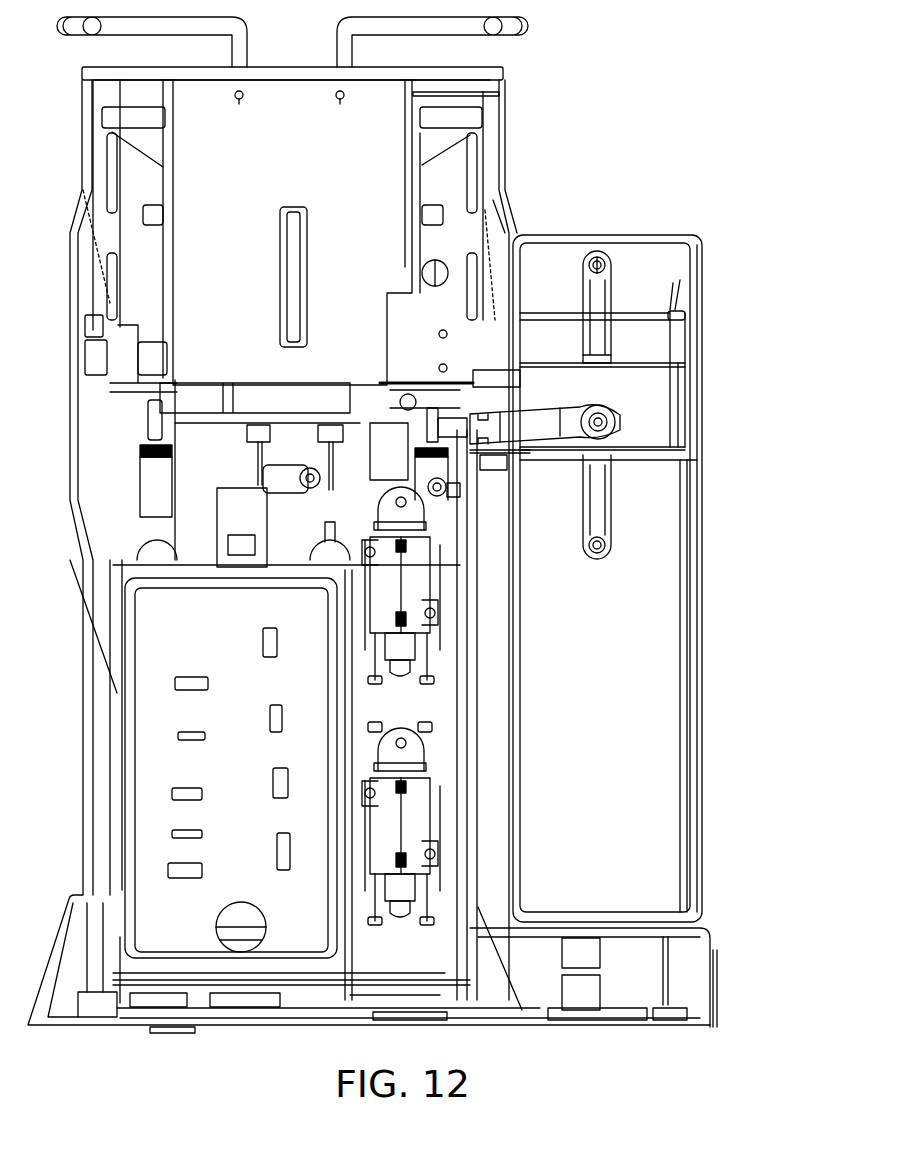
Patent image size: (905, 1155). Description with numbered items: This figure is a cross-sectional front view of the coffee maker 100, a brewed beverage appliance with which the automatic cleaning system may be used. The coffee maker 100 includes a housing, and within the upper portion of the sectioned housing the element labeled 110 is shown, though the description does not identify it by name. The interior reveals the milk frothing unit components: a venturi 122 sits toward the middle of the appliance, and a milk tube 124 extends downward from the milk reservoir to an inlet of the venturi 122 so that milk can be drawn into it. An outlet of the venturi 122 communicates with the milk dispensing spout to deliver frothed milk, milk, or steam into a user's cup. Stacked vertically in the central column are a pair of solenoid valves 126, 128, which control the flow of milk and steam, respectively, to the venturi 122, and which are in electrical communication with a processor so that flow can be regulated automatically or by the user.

The coffee maker 100 is at (660, 100).
The housing 110 is at (503, 128).
The venturi 122 is at (542, 408).
The milk tube 124 is at (615, 305).
The solenoid valve 126 is at (383, 590).
The solenoid valve 128 is at (383, 803).